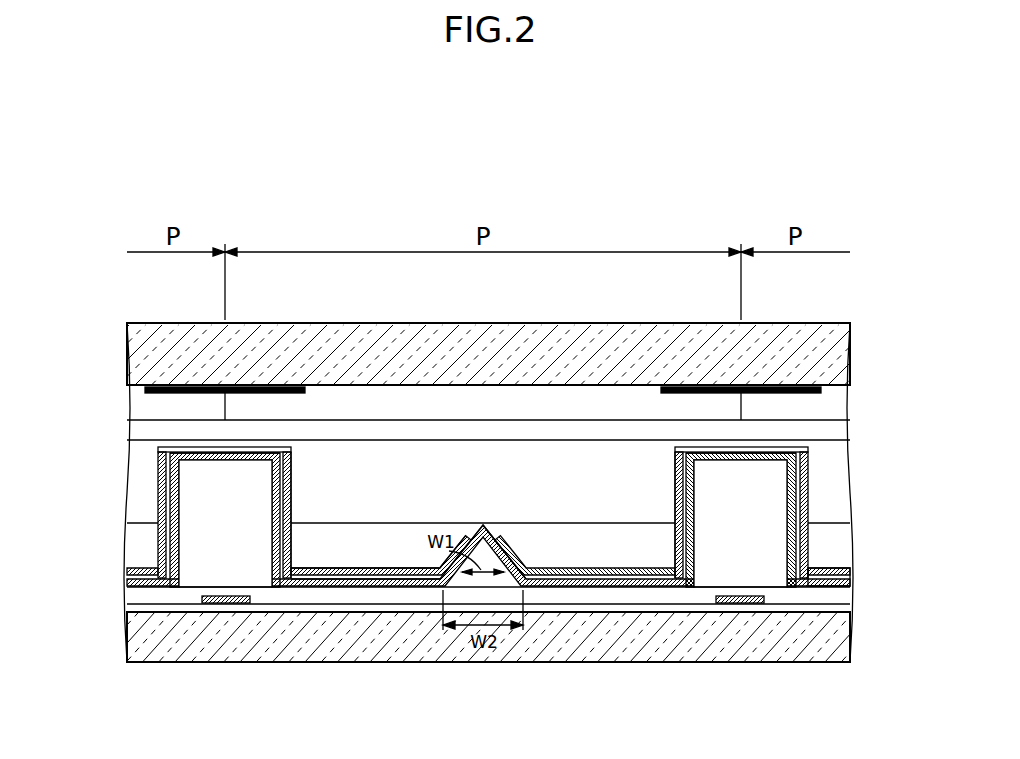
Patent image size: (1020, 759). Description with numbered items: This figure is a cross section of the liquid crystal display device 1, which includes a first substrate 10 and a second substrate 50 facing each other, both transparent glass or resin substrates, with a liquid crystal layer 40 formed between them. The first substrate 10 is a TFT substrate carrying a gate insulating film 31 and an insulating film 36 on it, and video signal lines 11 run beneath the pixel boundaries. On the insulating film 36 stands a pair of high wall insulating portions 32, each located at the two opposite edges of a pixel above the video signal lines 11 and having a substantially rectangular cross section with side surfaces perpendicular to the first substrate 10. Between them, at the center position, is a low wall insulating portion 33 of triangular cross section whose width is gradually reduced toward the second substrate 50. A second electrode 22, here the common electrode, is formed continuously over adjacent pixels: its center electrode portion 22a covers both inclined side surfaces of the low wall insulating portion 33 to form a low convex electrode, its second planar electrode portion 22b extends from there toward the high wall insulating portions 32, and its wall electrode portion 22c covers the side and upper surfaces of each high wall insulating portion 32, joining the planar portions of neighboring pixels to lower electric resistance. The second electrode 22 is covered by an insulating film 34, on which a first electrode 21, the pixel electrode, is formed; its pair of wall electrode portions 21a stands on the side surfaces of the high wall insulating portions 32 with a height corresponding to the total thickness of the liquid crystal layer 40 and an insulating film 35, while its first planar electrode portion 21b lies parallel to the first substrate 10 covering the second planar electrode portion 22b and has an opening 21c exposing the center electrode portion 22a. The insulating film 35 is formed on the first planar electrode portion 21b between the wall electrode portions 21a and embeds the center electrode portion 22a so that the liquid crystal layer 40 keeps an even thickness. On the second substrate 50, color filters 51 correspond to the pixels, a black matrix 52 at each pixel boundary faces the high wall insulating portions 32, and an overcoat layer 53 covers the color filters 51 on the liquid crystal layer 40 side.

The liquid crystal display device 1 is at (648, 207).
The first substrate 10 is at (848, 641).
The video signal lines 11 is at (230, 603).
The first electrode 21 is at (632, 590).
The wall electrode portions 21a is at (294, 480).
The first planar electrode portion 21b is at (318, 570).
The opening 21c is at (438, 568).
The second electrode 22 is at (575, 600).
The center electrode portion 22a is at (510, 558).
The second planar electrode portion 22b is at (366, 586).
The wall electrode portion 22c is at (202, 453).
The gate insulating film 31 is at (137, 605).
The high wall insulating portions 32 is at (483, 523).
The low wall insulating portion 33 is at (487, 553).
The insulating film 34 is at (853, 574).
The insulating film 35 is at (619, 523).
The insulating film 36 is at (853, 596).
The liquid crystal layer 40 is at (405, 489).
The second substrate 50 is at (848, 352).
The color filters 51 is at (493, 403).
The black matrix 52 is at (288, 392).
The overcoat layer 53 is at (838, 433).